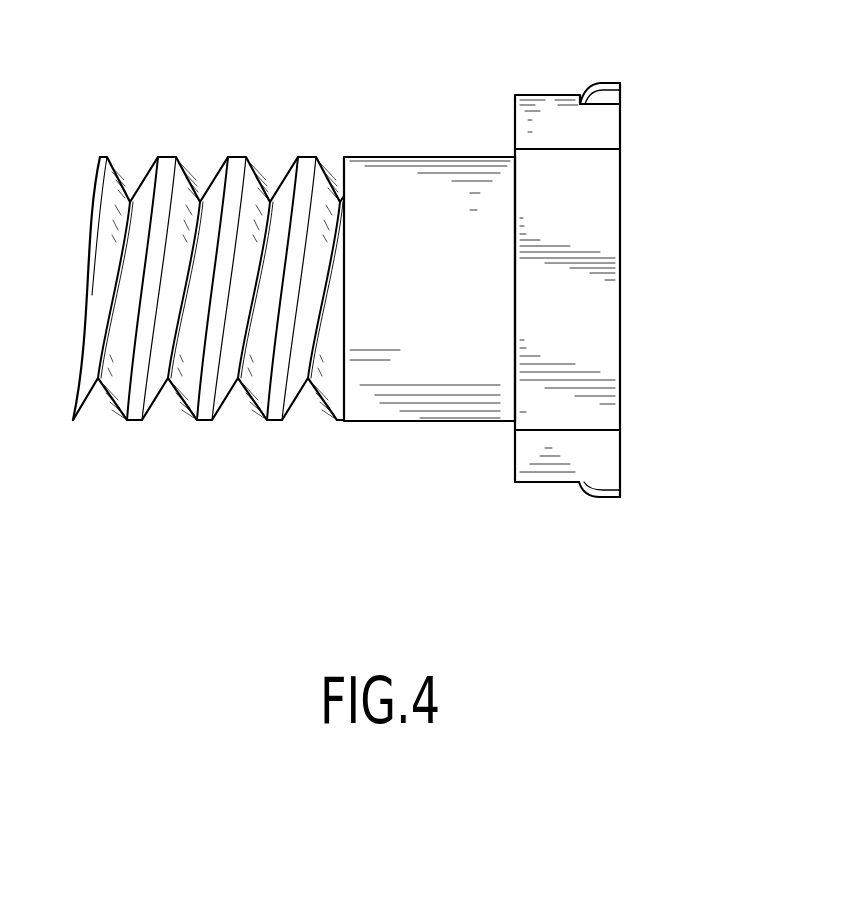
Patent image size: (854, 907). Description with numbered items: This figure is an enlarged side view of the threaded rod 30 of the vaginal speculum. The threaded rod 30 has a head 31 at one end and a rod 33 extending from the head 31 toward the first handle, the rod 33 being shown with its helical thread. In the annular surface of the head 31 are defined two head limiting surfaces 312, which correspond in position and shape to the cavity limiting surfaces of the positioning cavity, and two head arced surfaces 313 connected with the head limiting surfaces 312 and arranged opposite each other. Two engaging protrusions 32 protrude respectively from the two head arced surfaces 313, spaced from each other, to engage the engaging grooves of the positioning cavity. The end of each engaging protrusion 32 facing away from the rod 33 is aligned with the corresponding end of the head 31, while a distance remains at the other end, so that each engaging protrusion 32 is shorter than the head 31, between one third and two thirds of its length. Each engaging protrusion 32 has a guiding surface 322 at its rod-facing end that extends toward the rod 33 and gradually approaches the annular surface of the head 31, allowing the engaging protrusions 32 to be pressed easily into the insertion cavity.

The threaded rod 30 is at (262, 85).
The rod 33 is at (231, 172).
The head 31 is at (577, 507).
The head limiting surface 312 is at (579, 211).
The head arced surface 313 is at (550, 108).
The engaging protrusion 32 is at (620, 96).
The guiding surface 322 is at (581, 99).